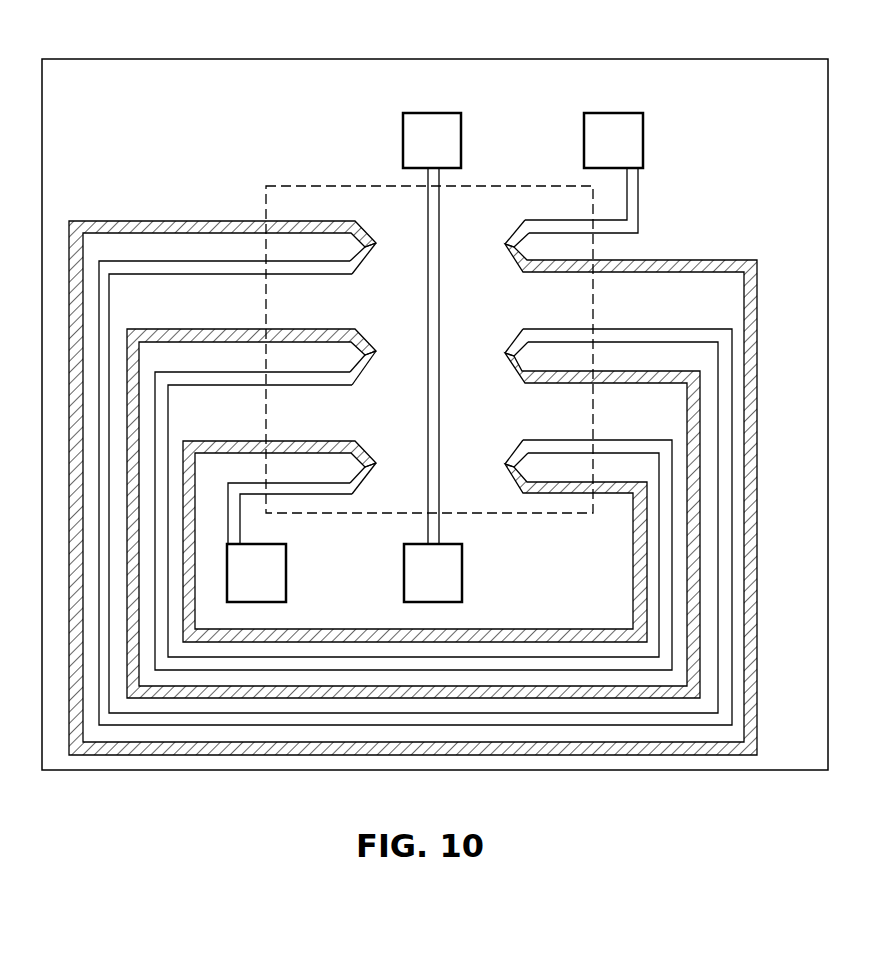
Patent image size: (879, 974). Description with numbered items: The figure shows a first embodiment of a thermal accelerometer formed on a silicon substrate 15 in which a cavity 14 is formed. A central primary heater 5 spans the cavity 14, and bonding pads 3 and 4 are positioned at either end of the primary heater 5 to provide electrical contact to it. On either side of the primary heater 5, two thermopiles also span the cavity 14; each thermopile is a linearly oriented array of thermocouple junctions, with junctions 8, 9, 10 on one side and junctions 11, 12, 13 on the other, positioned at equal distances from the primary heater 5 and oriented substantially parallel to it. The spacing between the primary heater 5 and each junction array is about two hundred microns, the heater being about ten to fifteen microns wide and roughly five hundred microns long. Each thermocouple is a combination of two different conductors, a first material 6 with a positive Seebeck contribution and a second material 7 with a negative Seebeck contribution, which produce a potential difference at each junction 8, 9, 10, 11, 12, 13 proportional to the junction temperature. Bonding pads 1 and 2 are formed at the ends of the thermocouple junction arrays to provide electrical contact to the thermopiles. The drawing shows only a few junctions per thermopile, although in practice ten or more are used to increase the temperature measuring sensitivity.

The bonding pad 1 is at (273, 572).
The bonding pad 2 is at (617, 113).
The bonding pad 3 is at (430, 113).
The bonding pad 4 is at (452, 575).
The primary heater 5 is at (433, 265).
The first material 6 is at (638, 190).
The second material 7 is at (670, 259).
The thermocouple junction 8 is at (504, 243).
The thermocouple junction 9 is at (505, 352).
The thermocouple junction 10 is at (505, 463).
The thermocouple junction 11 is at (375, 244).
The thermocouple junction 12 is at (375, 352).
The thermocouple junction 13 is at (375, 463).
The cavity 14 is at (532, 204).
The silicon substrate 15 is at (171, 140).